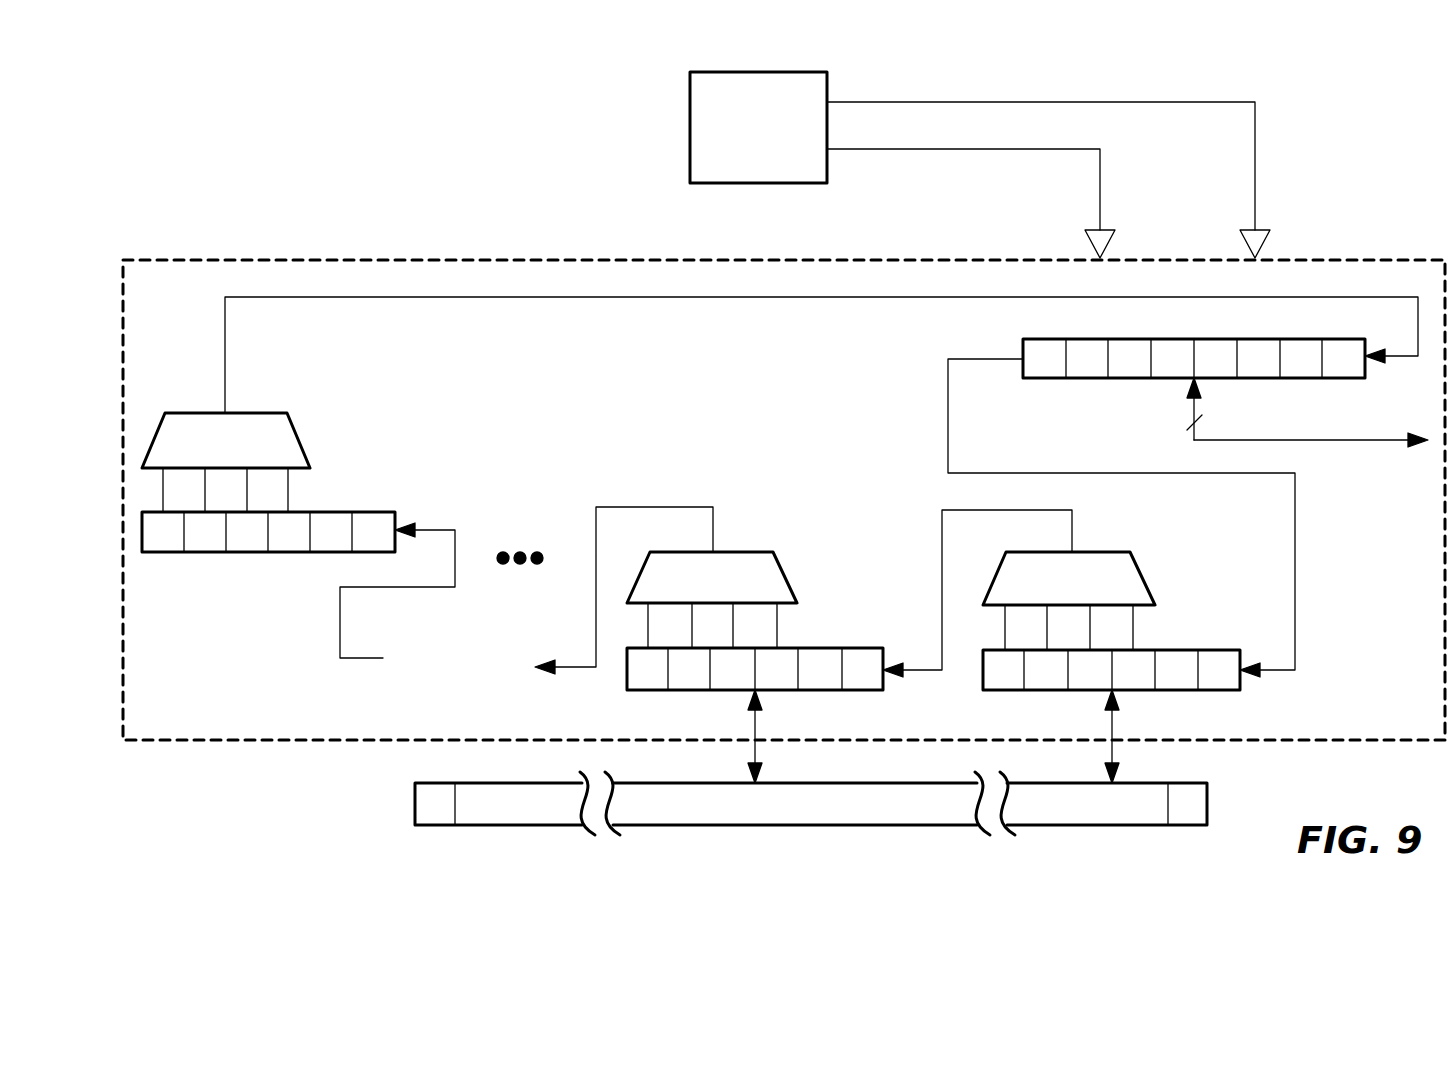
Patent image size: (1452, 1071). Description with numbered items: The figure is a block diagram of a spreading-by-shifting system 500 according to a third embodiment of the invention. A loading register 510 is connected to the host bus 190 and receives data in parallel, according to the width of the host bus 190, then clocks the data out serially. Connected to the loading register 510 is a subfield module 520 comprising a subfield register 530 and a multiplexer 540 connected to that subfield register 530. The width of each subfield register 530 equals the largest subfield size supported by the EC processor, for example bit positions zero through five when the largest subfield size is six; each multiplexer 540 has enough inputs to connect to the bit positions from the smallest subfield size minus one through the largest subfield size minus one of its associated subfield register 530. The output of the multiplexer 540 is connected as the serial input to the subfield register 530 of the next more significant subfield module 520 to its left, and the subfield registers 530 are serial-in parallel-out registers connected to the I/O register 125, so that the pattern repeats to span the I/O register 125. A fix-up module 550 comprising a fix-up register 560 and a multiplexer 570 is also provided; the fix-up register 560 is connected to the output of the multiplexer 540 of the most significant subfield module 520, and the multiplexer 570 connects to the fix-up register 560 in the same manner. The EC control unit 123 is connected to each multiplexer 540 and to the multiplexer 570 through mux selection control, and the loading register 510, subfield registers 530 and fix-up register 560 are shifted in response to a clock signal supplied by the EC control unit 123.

The EC control unit 123 is at (735, 72).
The spreading-by-shifting system 500 is at (521, 158).
The loading register 510 is at (1342, 339).
The subfield module 520 is at (910, 600).
The subfield register 530 is at (852, 648).
The multiplexer 540 is at (745, 552).
The fix-up module 550 is at (298, 515).
The fix-up register 560 is at (200, 552).
The multiplexer 570 is at (250, 413).
The host bus 190 is at (1333, 440).
The I/O register 125 is at (845, 825).